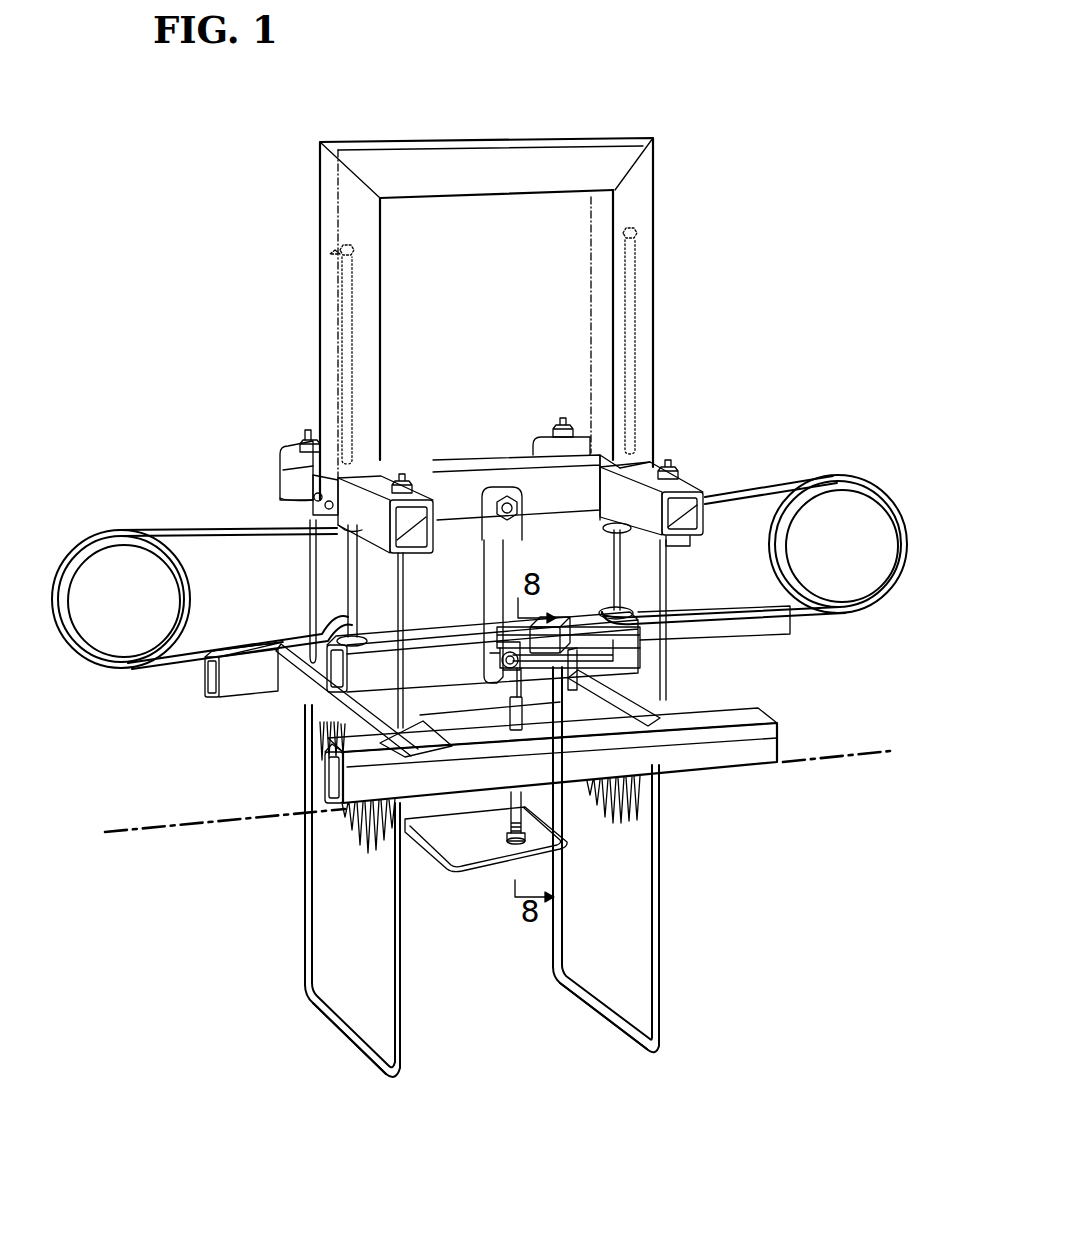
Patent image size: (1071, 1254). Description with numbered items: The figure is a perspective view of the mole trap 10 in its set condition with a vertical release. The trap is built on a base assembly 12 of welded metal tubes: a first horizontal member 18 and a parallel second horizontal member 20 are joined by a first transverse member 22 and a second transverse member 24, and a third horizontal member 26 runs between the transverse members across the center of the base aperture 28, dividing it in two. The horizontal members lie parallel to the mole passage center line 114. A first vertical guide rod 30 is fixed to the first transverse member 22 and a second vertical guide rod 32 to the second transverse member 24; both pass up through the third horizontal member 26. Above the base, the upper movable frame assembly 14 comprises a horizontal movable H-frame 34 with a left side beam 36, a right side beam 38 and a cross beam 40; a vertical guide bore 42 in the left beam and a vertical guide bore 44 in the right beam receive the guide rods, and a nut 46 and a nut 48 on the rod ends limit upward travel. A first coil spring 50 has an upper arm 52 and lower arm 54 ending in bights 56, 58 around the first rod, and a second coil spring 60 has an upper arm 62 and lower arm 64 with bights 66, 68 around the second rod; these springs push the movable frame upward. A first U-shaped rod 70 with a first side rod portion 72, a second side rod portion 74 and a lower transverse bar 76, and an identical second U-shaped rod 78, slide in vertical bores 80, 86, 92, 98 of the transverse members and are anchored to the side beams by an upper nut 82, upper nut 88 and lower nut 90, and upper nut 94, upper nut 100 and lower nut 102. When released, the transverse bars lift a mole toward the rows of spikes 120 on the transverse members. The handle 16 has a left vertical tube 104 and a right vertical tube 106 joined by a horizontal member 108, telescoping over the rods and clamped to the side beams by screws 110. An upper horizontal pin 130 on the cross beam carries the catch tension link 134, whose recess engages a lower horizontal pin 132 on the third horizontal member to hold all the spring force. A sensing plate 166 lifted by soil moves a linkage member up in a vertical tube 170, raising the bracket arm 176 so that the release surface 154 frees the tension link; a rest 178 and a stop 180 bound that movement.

The mole trap 10 is at (230, 341).
The base assembly 12 is at (793, 738).
The upper movable frame assembly 14 is at (268, 463).
The handle 16 is at (442, 138).
The first horizontal member 18 is at (205, 686).
The second horizontal member 20 is at (757, 770).
The first transverse member 22 is at (310, 718).
The second transverse member 24 is at (720, 700).
The third horizontal member 26 is at (340, 712).
The base aperture 28 is at (594, 712).
The first vertical guide rod 30 is at (350, 593).
The second vertical guide rod 32 is at (630, 590).
The horizontal movable H-frame 34 is at (290, 480).
The left side beam 36 is at (295, 450).
The right side beam 38 is at (700, 480).
The cross beam 40 is at (455, 455).
The vertical guide bore 42 is at (350, 462).
The vertical guide bore 44 is at (648, 448).
The nut 46 is at (338, 247).
The nut 48 is at (645, 233).
The first coil spring 50 is at (78, 662).
The upper arm 52 is at (180, 525).
The lower arm 54 is at (172, 685).
The bight 56 is at (340, 548).
The bight 58 is at (340, 618).
The second coil spring 60 is at (858, 478).
The upper arm 62 is at (775, 475).
The lower arm 64 is at (790, 626).
The bight 66 is at (625, 538).
The bight 68 is at (640, 609).
The first U-shaped rod 70 is at (305, 880).
The first side rod portion 72 is at (303, 940).
The second side rod portion 74 is at (397, 1003).
The lower transverse bar 76 is at (322, 1032).
The second U-shaped rod 78 is at (665, 930).
The vertical bore 80 is at (325, 700).
The upper nut 82 is at (300, 440).
The vertical bore 86 is at (330, 770).
The upper nut 88 is at (408, 484).
The lower nut 90 is at (395, 565).
The vertical bore 92 is at (572, 638).
The upper nut 94 is at (558, 428).
The vertical bore 98 is at (690, 682).
The upper nut 100 is at (680, 470).
The lower nut 102 is at (690, 548).
The left vertical tube 104 is at (325, 290).
The right vertical tube 106 is at (648, 298).
The horizontal member 108 is at (540, 138).
The screws 110 is at (315, 500).
The mole passage center line 114 is at (157, 827).
The spikes 120 is at (368, 853).
The upper horizontal pin 130 is at (508, 495).
The lower horizontal pin 132 is at (490, 652).
The catch tension link 134 is at (500, 470).
The release surface 154 is at (505, 613).
The plate 166 is at (480, 872).
The vertical tube 170 is at (500, 812).
The bracket arm 176 is at (650, 660).
The rest 178 is at (565, 690).
The stop 180 is at (550, 625).